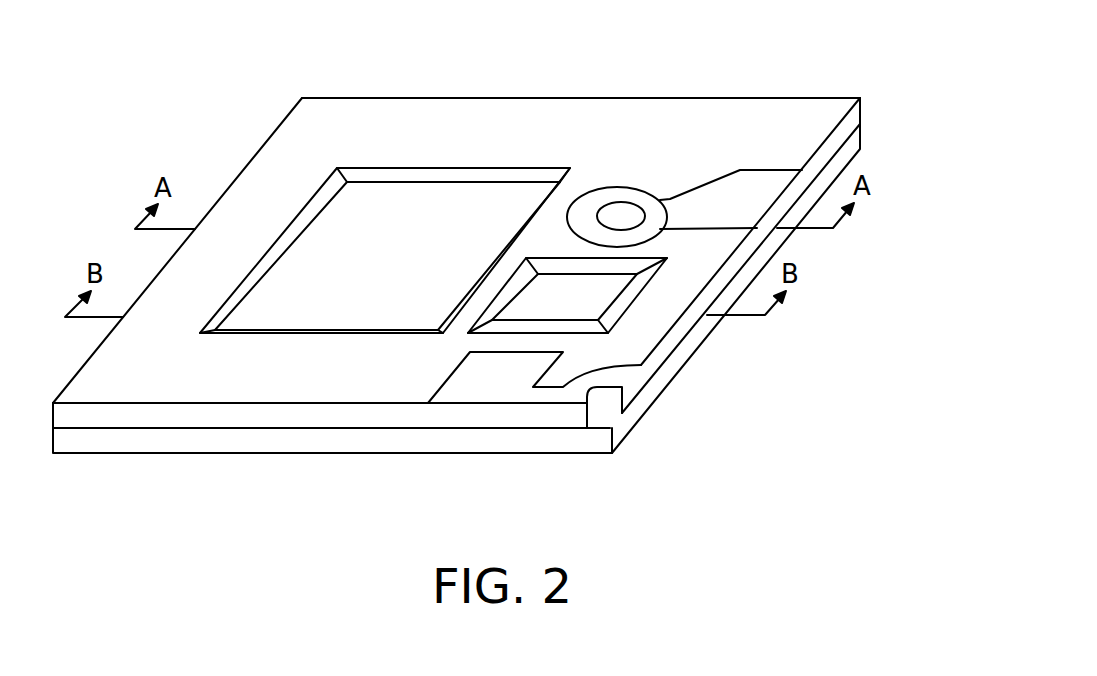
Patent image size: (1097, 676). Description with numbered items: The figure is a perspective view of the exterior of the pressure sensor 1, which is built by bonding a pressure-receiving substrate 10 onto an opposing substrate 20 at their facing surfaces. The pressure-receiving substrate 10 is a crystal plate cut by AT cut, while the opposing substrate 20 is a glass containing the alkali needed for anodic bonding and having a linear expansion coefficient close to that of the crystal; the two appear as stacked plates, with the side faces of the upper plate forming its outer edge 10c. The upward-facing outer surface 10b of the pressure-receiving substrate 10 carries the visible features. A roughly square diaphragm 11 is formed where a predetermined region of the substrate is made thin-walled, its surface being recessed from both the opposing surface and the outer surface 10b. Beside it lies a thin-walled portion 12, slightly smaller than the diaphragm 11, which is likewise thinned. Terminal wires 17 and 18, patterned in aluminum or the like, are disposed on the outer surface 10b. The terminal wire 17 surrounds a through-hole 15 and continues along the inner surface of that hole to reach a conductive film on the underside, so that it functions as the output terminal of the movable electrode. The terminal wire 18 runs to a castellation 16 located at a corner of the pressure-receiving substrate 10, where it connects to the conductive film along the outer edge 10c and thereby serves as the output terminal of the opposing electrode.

The pressure sensor 1 is at (797, 55).
The pressure-receiving substrate 10 is at (870, 103).
The outer surface 10b is at (675, 108).
The outer edge 10c is at (305, 413).
The diaphragm 11 is at (452, 197).
The thin-walled portion 12 is at (594, 293).
The through-hole 15 is at (629, 212).
The castellation 16 is at (594, 405).
The terminal wire 17 is at (765, 185).
The terminal wire 18 is at (465, 373).
The opposing substrate 20 is at (872, 135).